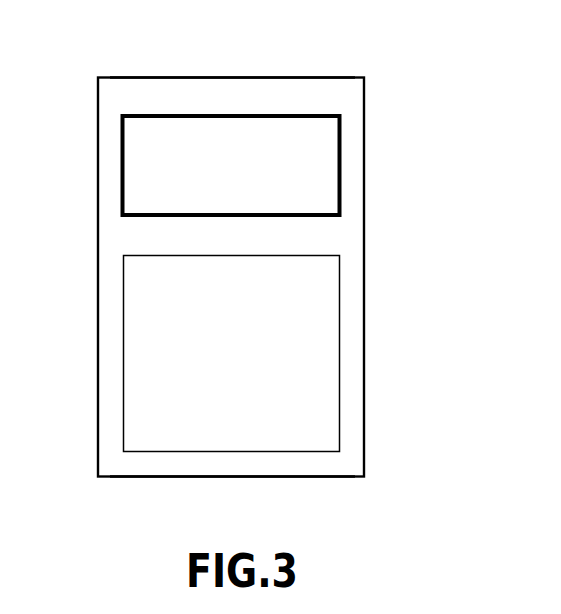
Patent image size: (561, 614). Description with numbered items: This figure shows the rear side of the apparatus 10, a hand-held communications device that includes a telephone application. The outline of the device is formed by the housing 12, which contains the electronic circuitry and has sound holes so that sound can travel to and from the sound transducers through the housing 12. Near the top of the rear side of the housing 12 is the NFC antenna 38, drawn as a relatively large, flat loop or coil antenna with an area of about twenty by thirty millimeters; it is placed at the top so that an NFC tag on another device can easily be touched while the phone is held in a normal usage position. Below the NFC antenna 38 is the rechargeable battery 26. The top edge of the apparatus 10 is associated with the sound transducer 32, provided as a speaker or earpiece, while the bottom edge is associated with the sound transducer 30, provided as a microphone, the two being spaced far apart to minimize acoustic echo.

The apparatus 10 is at (429, 64).
The housing 12 is at (97, 252).
The rechargeable battery 26 is at (322, 377).
The sound transducer 30 is at (284, 478).
The sound transducer 32 is at (283, 76).
The NFC antenna 38 is at (341, 189).